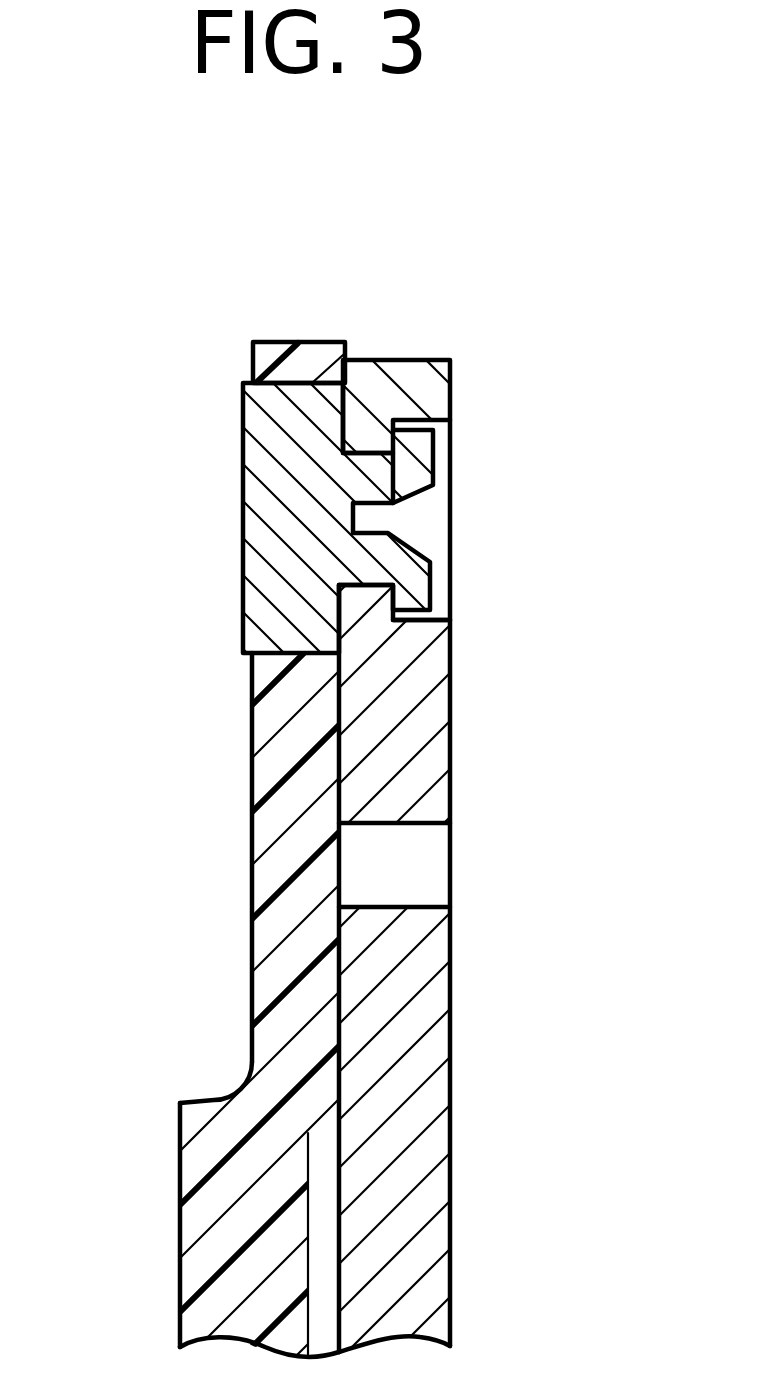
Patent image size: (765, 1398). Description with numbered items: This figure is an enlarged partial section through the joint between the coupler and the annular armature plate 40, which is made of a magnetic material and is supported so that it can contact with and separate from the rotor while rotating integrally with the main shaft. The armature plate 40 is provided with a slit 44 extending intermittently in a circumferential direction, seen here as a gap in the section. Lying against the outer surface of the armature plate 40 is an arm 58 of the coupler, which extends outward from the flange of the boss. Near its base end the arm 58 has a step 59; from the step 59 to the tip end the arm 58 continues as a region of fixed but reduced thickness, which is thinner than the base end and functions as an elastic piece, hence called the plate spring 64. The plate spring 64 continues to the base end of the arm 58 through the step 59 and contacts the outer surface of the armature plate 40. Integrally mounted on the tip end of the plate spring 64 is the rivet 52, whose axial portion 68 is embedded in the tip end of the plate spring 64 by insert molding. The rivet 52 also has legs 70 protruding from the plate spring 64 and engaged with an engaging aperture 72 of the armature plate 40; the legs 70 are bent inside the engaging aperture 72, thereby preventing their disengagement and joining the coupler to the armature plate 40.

The armature plate 40 is at (399, 368).
The slit 44 is at (420, 877).
The rivet 52 is at (262, 526).
The arm 58 is at (202, 1224).
The step 59 is at (210, 1100).
The plate spring 64 is at (268, 878).
The axial portion 68 is at (294, 380).
The legs 70 is at (420, 441).
The engaging aperture 72 is at (425, 517).